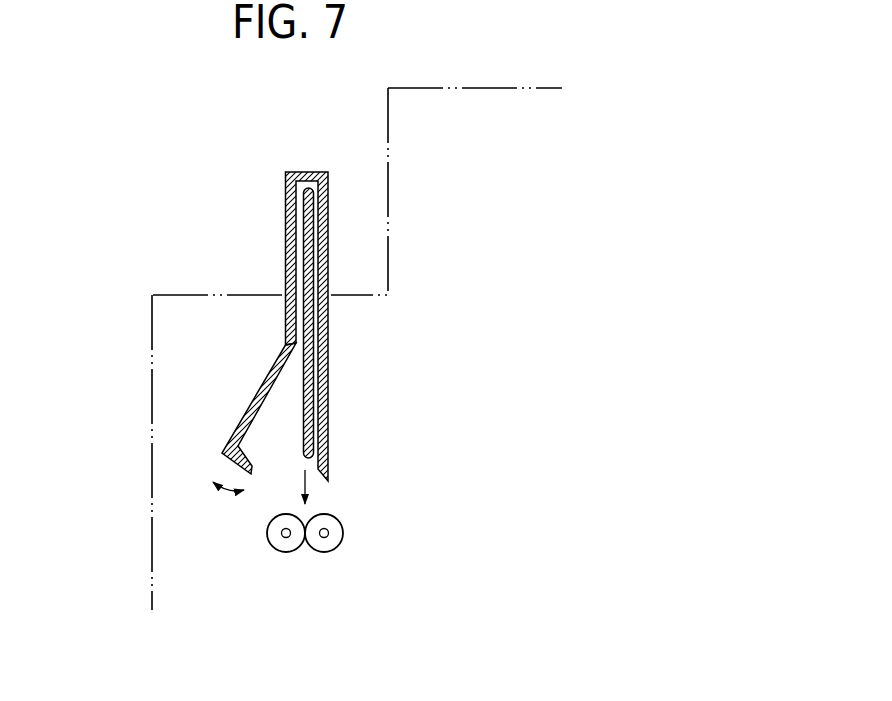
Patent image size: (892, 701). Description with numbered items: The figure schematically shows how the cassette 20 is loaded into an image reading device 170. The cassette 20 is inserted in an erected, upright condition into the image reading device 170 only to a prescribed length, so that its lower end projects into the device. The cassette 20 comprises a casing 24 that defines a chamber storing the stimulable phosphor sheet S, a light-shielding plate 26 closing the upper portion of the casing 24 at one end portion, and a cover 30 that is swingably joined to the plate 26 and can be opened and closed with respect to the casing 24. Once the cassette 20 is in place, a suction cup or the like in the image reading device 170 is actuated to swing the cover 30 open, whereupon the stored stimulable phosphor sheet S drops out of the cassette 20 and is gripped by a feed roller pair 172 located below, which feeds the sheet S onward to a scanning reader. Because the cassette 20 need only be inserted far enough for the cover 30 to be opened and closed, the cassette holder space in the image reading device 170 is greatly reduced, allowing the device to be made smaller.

The cassette 20 is at (277, 205).
The casing 24 is at (328, 338).
The light-shielding plate 26 is at (287, 255).
The cover 30 is at (255, 377).
The stimulable phosphor sheet S is at (306, 392).
The image reading device 170 is at (150, 401).
The feed roller pair 172 is at (338, 533).